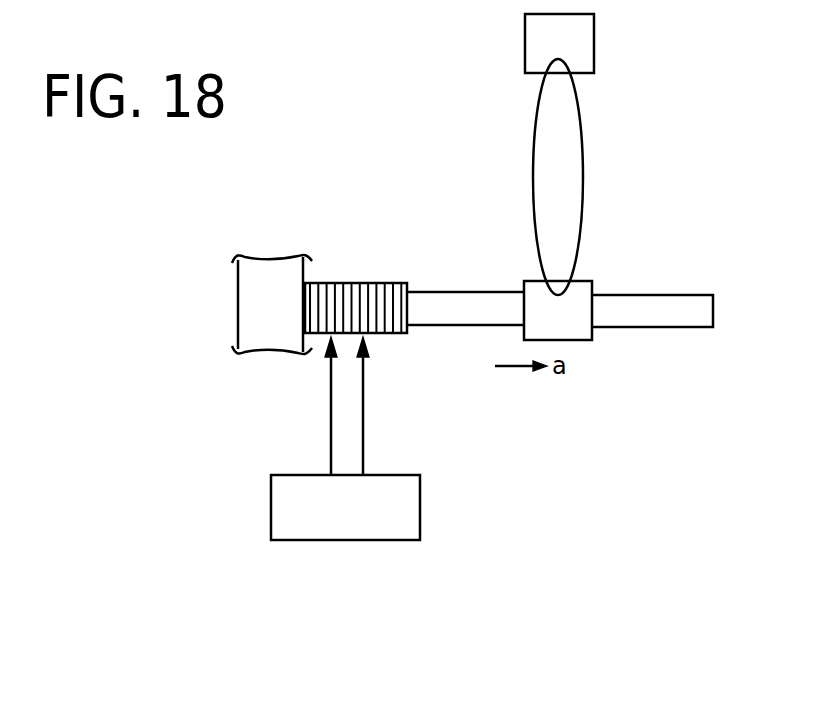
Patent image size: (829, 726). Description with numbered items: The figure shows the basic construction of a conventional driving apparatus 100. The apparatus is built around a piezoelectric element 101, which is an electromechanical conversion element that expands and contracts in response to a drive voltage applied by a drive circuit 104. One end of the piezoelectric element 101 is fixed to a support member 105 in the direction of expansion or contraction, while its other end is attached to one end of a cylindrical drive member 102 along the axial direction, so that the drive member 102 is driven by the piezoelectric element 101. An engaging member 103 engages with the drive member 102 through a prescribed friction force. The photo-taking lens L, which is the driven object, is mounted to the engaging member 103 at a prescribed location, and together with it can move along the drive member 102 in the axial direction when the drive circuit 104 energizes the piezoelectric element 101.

The driving apparatus 100 is at (415, 48).
The photo-taking lens L is at (583, 175).
The piezoelectric element 101 is at (389, 284).
The cylindrical drive member 102 is at (682, 307).
The engaging member 103 is at (580, 283).
The drive circuit 104 is at (271, 506).
The support member 105 is at (248, 307).